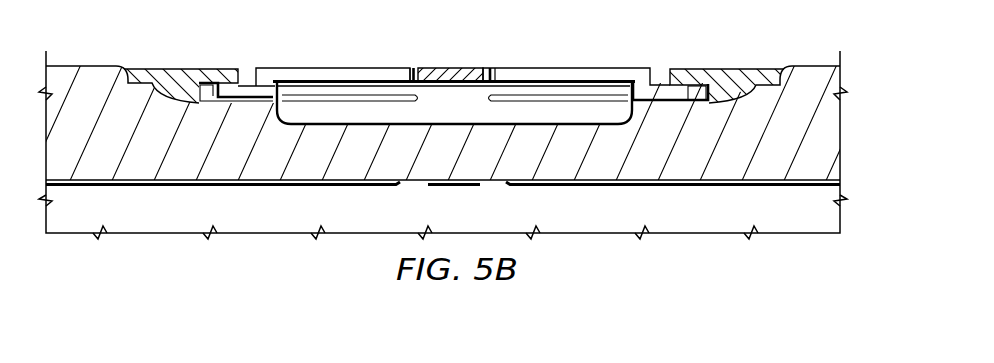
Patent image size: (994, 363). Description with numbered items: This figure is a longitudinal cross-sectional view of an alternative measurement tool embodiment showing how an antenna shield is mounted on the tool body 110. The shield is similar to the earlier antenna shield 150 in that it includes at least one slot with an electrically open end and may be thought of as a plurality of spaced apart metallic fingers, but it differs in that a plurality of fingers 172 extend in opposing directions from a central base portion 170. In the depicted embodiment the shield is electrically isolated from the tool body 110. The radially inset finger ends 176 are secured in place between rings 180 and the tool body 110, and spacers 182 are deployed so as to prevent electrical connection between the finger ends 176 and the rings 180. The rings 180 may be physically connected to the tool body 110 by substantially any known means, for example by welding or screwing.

The tool body 110 is at (473, 163).
The antenna shield 150 is at (413, 56).
The base portion 170 is at (448, 67).
The fingers 172 is at (334, 67).
The radially inset finger ends 176 is at (252, 82).
The rings 180 is at (173, 67).
The spacers 182 is at (697, 88).